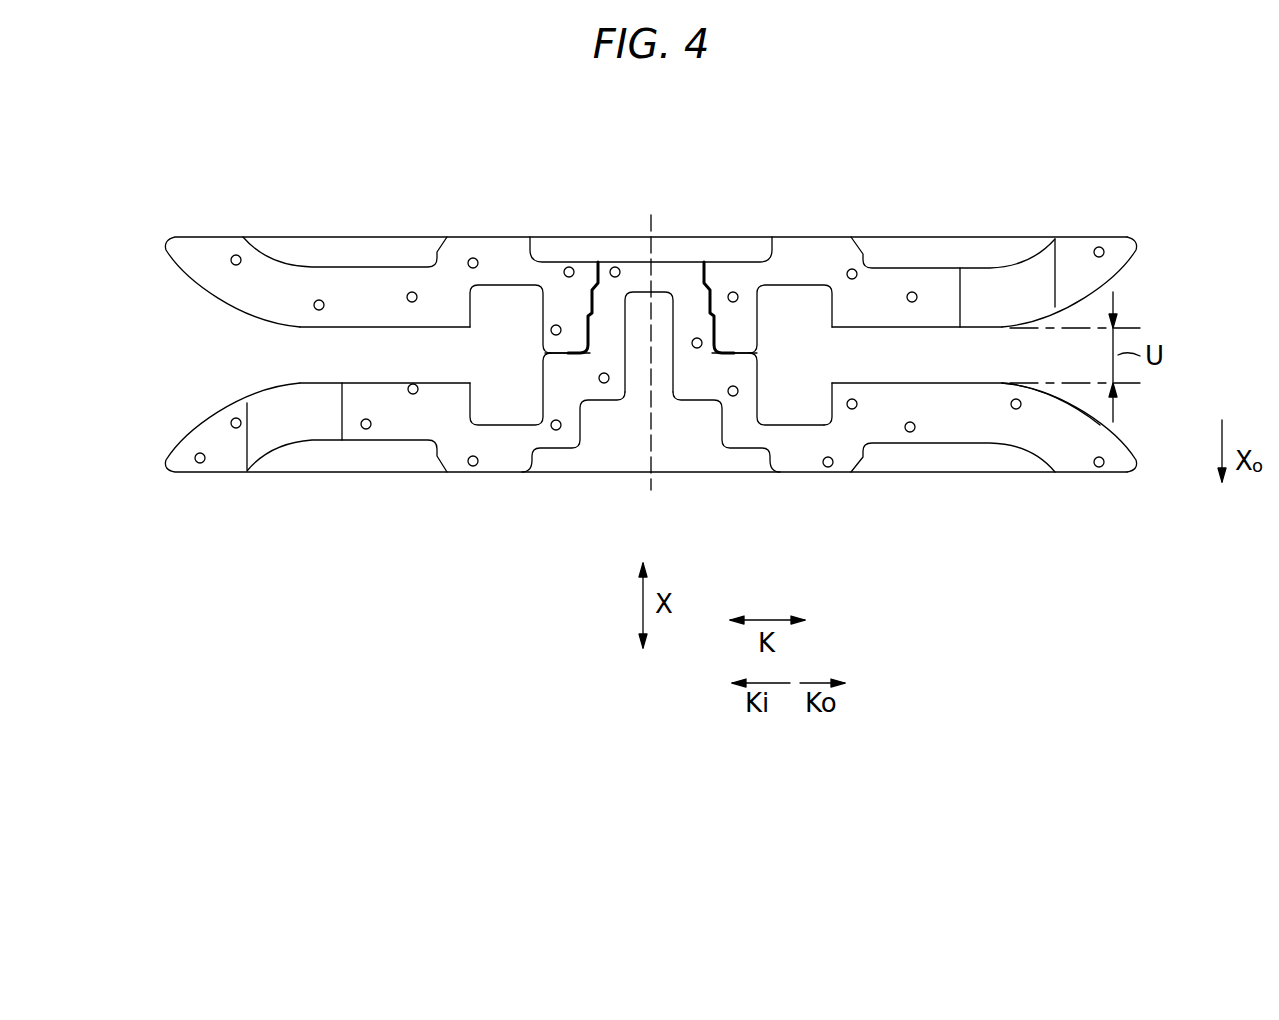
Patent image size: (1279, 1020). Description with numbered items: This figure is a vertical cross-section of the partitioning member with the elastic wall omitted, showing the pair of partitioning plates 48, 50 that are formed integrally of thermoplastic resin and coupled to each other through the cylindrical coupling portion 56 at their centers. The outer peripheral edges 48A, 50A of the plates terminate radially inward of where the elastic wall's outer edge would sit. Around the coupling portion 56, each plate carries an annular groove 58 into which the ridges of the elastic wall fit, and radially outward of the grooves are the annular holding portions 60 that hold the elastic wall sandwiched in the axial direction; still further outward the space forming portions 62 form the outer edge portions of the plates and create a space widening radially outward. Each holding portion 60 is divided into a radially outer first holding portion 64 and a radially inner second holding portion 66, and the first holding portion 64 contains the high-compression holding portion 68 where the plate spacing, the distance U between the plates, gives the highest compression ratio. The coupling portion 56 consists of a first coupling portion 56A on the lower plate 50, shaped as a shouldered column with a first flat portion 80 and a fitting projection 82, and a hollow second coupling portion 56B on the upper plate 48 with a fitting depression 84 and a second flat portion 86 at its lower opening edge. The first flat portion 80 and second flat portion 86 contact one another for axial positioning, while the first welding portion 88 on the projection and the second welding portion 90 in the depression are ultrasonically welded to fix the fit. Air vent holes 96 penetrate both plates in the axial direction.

The partitioning plate 48 is at (848, 238).
The outer peripheral edge 48A is at (1135, 245).
The partitioning plate 50 is at (851, 463).
The outer peripheral edge 50A is at (1137, 470).
The coupling portion 56 is at (684, 265).
The first coupling portion 56A is at (612, 396).
The second coupling portion 56B is at (572, 305).
The annular groove 58 is at (503, 298).
The holding portion 60 is at (915, 282).
The space forming portion 62 is at (1085, 262).
The first holding portion 64 is at (935, 405).
The second holding portion 66 is at (872, 407).
The high-compression holding portion 68 is at (975, 395).
The first flat portion 80 is at (568, 353).
The fitting projection 82 is at (622, 290).
The fitting depression 84 is at (596, 340).
The second flat portion 86 is at (734, 357).
The first welding portion 88 is at (708, 283).
The second welding portion 90 is at (712, 312).
The air vent hole 96 is at (998, 280).